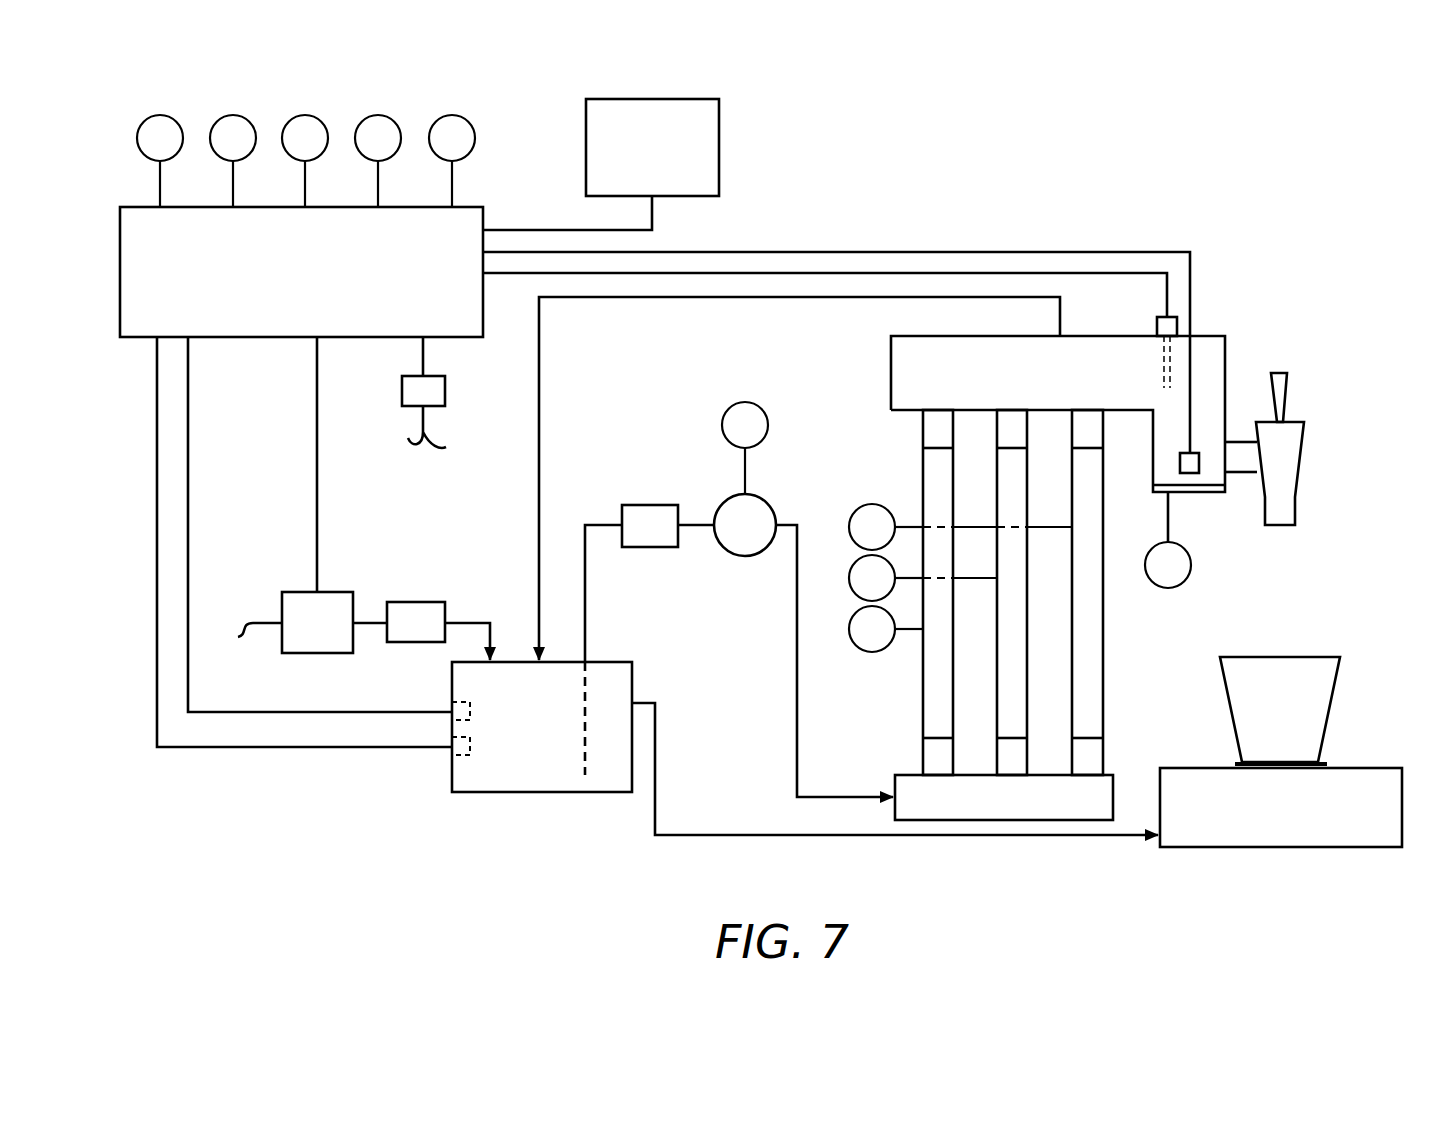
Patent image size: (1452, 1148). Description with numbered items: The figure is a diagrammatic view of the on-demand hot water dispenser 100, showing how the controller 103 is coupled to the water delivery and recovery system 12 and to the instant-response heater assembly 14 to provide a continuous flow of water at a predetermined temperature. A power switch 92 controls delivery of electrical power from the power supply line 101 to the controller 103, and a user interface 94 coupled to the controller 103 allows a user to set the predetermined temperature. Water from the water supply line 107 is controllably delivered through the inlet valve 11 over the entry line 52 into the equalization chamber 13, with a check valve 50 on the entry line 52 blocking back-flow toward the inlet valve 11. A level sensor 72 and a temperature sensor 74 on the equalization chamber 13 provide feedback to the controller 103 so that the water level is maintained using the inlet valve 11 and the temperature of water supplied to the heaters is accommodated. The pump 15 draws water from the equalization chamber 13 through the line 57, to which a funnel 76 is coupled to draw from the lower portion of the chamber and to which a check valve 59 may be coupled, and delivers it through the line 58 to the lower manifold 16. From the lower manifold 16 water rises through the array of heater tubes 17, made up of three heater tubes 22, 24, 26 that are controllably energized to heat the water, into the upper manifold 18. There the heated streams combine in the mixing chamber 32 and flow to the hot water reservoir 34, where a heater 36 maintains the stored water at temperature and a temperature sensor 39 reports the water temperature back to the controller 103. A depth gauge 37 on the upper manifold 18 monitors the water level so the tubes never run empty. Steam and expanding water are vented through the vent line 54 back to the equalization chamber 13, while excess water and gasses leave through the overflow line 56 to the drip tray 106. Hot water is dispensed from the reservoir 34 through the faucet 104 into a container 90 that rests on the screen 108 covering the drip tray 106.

The inlet valve 11 is at (353, 590).
The water delivery and recovery system 12 is at (348, 776).
The equalization chamber 13 is at (487, 815).
The instant-response heater assembly 14 is at (1226, 289).
The pump 15 is at (710, 488).
The lower manifold 16 is at (1122, 761).
The array of heater tubes 17 is at (942, 546).
The upper manifold 18 is at (1118, 333).
The heater tube 22 is at (919, 447).
The heater tube 24 is at (996, 465).
The heater tube 26 is at (1071, 480).
The mixing chamber 32 is at (1080, 366).
The hot water reservoir 34 is at (1203, 405).
The heater 36 is at (1206, 497).
The depth gauge 37 is at (1174, 315).
The temperature sensor 39 is at (1201, 450).
The check valve 50 is at (451, 600).
The entry line 52 is at (466, 620).
The vent line 54 is at (978, 296).
The overflow line 56 is at (654, 820).
The line 57 is at (586, 572).
The line 58 is at (797, 605).
The check valve 59 is at (650, 503).
The level sensor 72 is at (458, 699).
The temperature sensor 74 is at (458, 760).
The funnel 76 is at (605, 681).
The container 90 is at (1328, 640).
The power switch 92 is at (400, 390).
The user interface 94 is at (652, 96).
The on-demand hot water dispenser 100 is at (1272, 156).
The power supply line 101 is at (431, 431).
The controller 103 is at (488, 203).
The faucet 104 is at (1312, 438).
The drip tray 106 is at (1405, 830).
The water supply line 107 is at (263, 610).
The screen 108 is at (1371, 764).